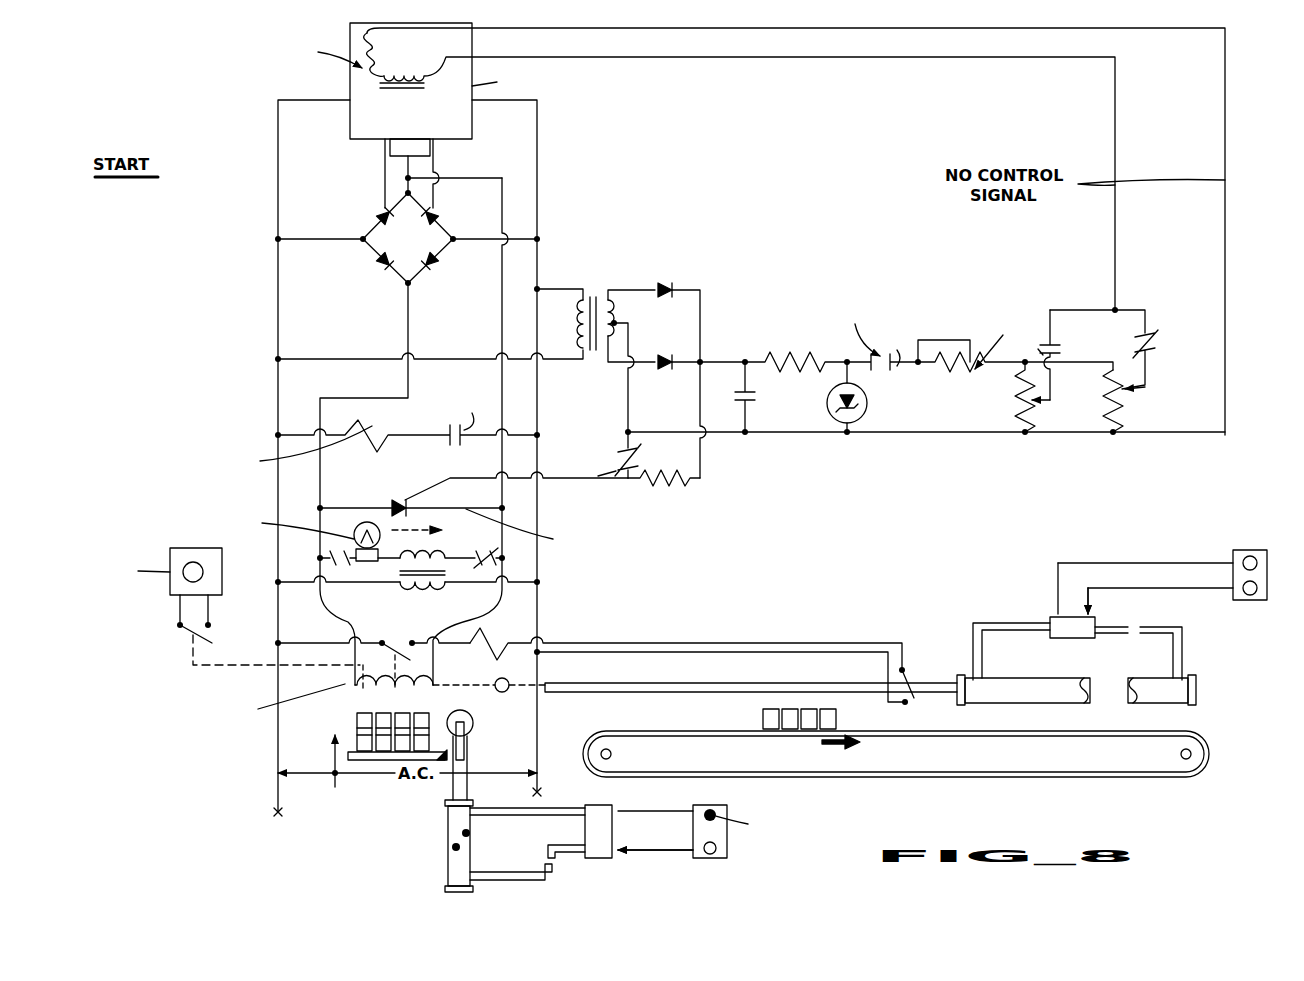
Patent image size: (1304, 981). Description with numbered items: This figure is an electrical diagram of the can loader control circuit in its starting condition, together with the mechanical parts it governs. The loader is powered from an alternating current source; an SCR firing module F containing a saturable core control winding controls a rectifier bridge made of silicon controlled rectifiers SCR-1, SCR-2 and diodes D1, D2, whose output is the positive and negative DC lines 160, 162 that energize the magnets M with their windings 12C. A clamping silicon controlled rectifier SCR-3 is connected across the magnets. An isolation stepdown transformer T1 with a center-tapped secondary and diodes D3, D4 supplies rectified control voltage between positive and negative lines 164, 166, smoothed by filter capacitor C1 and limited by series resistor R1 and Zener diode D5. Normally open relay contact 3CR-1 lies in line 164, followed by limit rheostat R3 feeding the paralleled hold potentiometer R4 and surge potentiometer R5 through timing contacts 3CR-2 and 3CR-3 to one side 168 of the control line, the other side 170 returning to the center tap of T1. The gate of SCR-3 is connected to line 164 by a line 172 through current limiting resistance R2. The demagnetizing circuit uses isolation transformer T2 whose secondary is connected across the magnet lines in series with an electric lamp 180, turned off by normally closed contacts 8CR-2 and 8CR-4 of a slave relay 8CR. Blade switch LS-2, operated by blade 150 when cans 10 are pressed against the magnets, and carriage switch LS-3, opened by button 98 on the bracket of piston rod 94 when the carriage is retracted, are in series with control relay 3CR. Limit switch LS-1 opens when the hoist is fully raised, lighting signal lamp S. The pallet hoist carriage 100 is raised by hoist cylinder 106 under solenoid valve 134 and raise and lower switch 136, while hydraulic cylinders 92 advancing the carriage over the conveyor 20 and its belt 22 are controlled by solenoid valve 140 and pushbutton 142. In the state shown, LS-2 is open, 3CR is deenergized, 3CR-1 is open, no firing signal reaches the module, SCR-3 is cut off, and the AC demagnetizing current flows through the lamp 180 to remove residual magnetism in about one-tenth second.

The SCR firing module F is at (350, 90).
The control line side 168 is at (1115, 126).
The control line side 170 is at (1225, 219).
The silicon controlled rectifier SCR-1 is at (376, 211).
The silicon controlled rectifier SCR-2 is at (436, 220).
The diode D1 is at (372, 269).
The diode D2 is at (437, 266).
The negative DC line 162 is at (408, 318).
The positive DC line 160 is at (502, 318).
The isolation stepdown transformer T1 is at (592, 278).
The diode D3 is at (672, 289).
The diode D4 is at (674, 360).
The gate line 172 is at (622, 469).
The current limiting resistance R2 is at (680, 478).
The positive DC control line 164 is at (735, 362).
The filter capacitor C1 is at (752, 410).
The series resistor R1 is at (800, 348).
The negative DC control line 166 is at (792, 435).
The Zener diode D5 is at (860, 412).
The normally open relay contact 3CR-1 is at (869, 363).
The limit rheostat R3 is at (971, 340).
The hold potentiometer R4 is at (1020, 421).
The relay timing contact 3CR-2 is at (1067, 355).
The relay timing contact 3CR-3 is at (1163, 351).
The surge potentiometer R5 is at (1118, 427).
The slave relay 8CR is at (325, 429).
The clamping silicon controlled rectifier SCR-3 is at (405, 498).
The electric lamp 180 is at (360, 524).
The normally closed relay contact 8CR-4 is at (339, 567).
The isolation transformer T2 is at (433, 587).
The normally closed relay contact 8CR-2 is at (492, 557).
The blade limit switch LS-2 is at (416, 654).
The control relay 3CR is at (686, 643).
The carriage limit switch LS-3 is at (913, 669).
The signal lamp S is at (168, 591).
The limit switch LS-1 is at (186, 634).
The blade 150 is at (362, 657).
The magnet coil M is at (422, 681).
The windings 12C is at (431, 691).
The switch operator button 98 is at (512, 683).
The cans 10 is at (378, 729).
The pallet hoist carriage 100 is at (469, 749).
The hoist cylinder 106 is at (452, 848).
The solenoid valve 134 is at (598, 858).
The raise and lower switch 136 is at (693, 858).
The piston rod 94 is at (738, 684).
The hydraulic cylinder 92 is at (1138, 686).
The solenoid valve 140 is at (1093, 623).
The advance and retract pushbutton 142 is at (1249, 550).
The conveyor 20 is at (1205, 739).
The conveyor belt 22 is at (1075, 779).